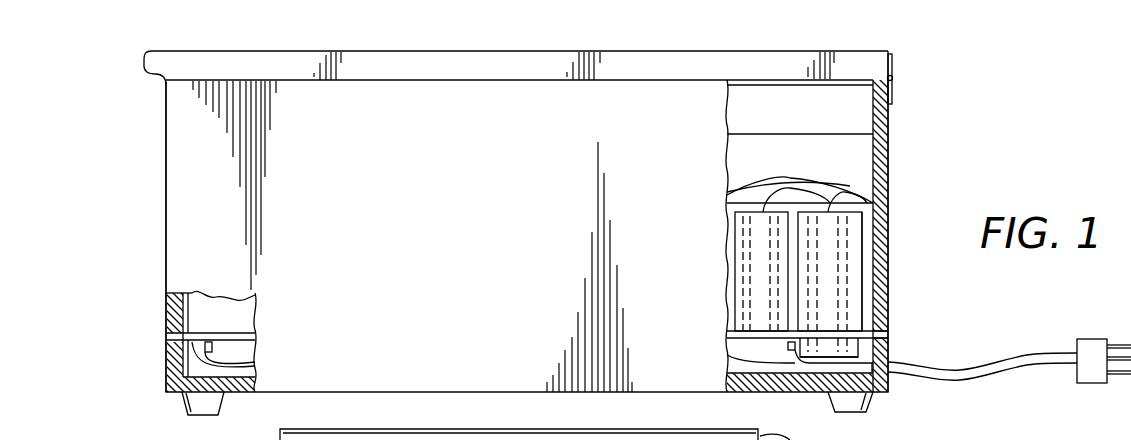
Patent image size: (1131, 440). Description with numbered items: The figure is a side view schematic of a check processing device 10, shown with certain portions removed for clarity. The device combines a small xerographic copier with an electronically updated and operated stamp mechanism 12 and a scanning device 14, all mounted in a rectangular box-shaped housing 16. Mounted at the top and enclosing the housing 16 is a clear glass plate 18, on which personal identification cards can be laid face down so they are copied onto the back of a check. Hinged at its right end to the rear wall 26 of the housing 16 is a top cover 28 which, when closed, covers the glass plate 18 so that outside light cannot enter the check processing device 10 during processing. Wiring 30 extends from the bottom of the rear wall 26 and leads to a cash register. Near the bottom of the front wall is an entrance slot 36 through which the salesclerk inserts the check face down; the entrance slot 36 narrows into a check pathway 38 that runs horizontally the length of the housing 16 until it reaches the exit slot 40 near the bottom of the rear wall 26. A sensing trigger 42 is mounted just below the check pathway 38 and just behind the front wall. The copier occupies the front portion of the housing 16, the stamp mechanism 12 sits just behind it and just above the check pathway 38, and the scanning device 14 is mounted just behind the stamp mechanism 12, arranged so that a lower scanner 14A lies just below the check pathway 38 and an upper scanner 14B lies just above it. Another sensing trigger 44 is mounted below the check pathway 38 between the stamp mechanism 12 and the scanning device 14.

The check processing device 10 is at (134, 379).
The stamp mechanism 12 is at (760, 247).
The scanning device 14 is at (835, 253).
The lower scanner 14A is at (858, 345).
The upper scanner 14B is at (860, 280).
The housing 16 is at (167, 152).
The glass plate 18 is at (856, 80).
The rear wall 26 is at (893, 170).
The top cover 28 is at (636, 62).
The wiring 30 is at (1055, 374).
The entrance slot 36 is at (167, 342).
The check pathway 38 is at (745, 334).
The exit slot 40 is at (887, 334).
The sensing trigger 42 is at (213, 348).
The sensing trigger 44 is at (788, 346).